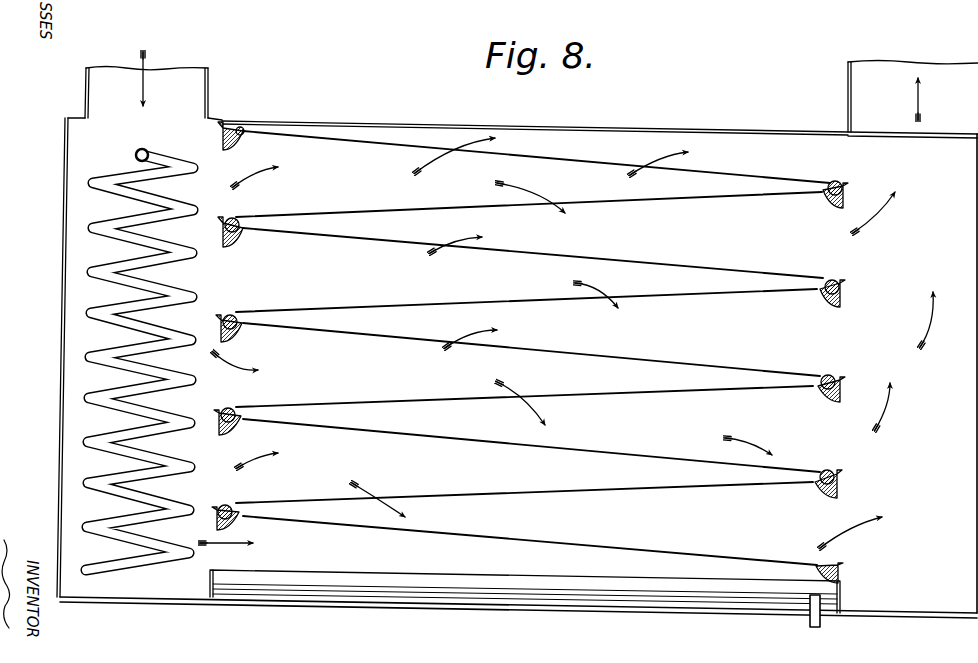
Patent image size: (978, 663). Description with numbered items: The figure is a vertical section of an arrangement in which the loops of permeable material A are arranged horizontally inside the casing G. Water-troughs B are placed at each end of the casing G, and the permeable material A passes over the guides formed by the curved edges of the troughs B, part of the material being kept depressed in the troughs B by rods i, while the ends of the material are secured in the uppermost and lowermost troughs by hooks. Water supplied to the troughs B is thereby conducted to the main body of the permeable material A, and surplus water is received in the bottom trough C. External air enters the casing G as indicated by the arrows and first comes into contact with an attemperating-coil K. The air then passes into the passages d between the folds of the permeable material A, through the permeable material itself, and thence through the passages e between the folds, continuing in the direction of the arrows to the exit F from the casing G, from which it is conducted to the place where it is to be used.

The permeable material A is at (741, 270).
The water-trough B is at (231, 147).
The bottom trough C is at (373, 590).
The passages d is at (369, 371).
The passages e is at (674, 341).
The exit F is at (913, 97).
The casing G is at (341, 126).
The rods i is at (241, 231).
The attemperating-coil K is at (92, 313).